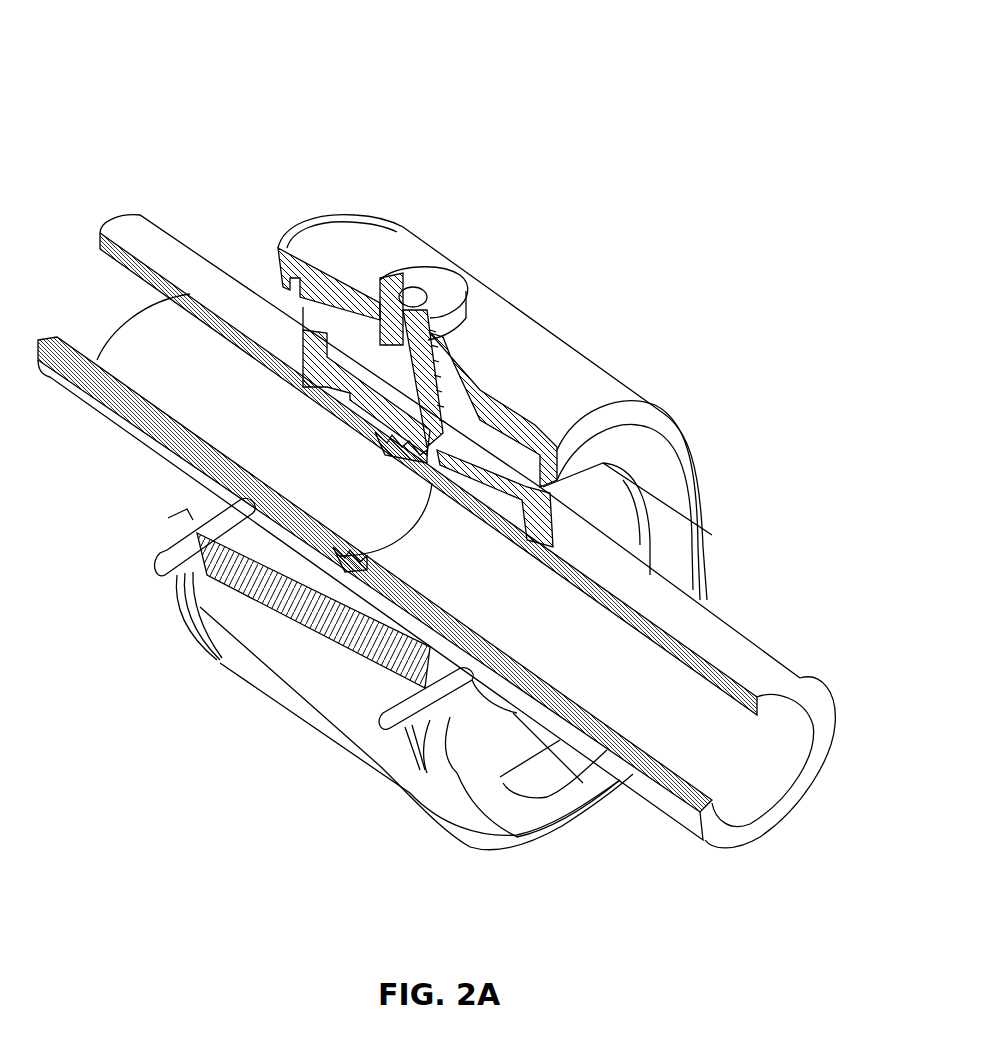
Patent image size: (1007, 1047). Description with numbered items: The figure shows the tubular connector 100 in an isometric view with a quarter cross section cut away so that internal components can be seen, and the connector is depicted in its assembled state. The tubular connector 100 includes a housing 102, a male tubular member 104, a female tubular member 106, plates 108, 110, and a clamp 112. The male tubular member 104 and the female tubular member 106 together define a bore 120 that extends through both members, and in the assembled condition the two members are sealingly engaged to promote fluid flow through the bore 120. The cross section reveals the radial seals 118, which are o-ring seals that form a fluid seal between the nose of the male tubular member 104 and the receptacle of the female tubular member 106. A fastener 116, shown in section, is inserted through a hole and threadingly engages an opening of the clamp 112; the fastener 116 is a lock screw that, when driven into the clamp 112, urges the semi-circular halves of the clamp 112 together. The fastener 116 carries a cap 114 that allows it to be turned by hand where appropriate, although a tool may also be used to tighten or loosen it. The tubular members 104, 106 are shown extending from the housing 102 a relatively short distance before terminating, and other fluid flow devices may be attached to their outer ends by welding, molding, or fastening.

The tubular connector 100 is at (763, 102).
The housing 102 is at (628, 370).
The male tubular member 104 is at (763, 638).
The female tubular member 106 is at (180, 224).
The plate 108 is at (417, 733).
The plate 110 is at (178, 583).
The clamp 112 is at (508, 448).
The cap 114 is at (440, 280).
The fastener 116 is at (405, 292).
The radial seals 118 is at (320, 570).
The bore 120 is at (780, 765).